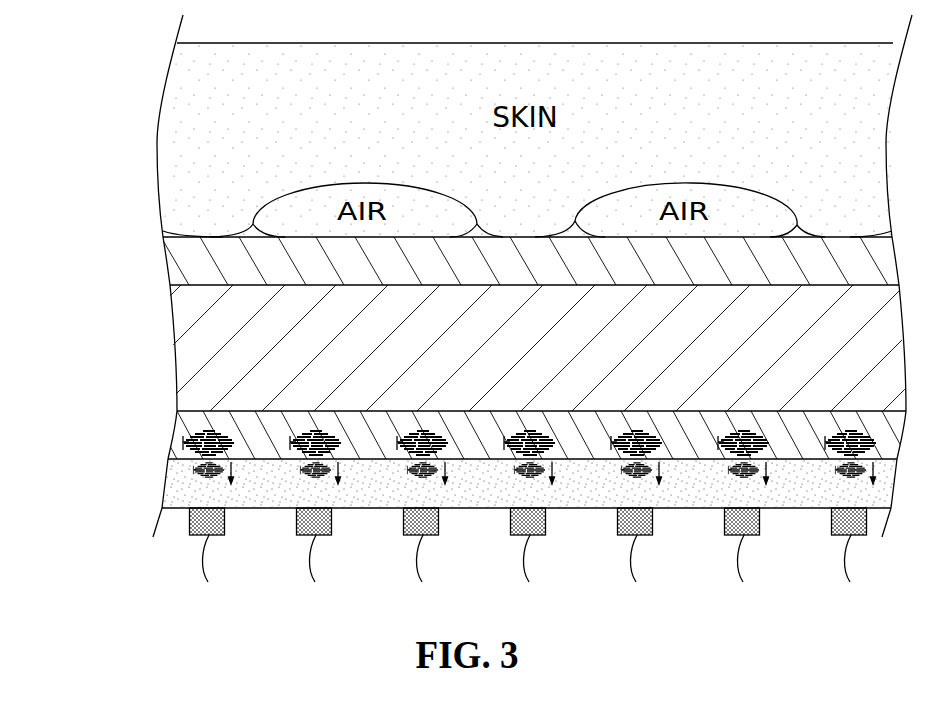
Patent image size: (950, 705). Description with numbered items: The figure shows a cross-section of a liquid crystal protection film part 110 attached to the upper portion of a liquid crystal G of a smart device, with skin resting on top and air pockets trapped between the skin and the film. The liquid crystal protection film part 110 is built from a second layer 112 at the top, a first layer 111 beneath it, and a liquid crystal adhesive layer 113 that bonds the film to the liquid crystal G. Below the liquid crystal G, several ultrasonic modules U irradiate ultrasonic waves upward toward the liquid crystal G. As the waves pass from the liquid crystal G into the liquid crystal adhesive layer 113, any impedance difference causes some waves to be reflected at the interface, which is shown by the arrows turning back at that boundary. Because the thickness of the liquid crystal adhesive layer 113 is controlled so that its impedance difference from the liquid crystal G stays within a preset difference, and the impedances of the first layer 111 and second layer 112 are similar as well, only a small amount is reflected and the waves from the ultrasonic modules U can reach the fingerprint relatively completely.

The liquid crystal protection film part 110 is at (78, 263).
The first layer 111 is at (185, 356).
The second layer 112 is at (185, 273).
The liquid crystal adhesive layer 113 is at (187, 432).
The liquid crystal G is at (185, 475).
The ultrasonic module U is at (528, 557).